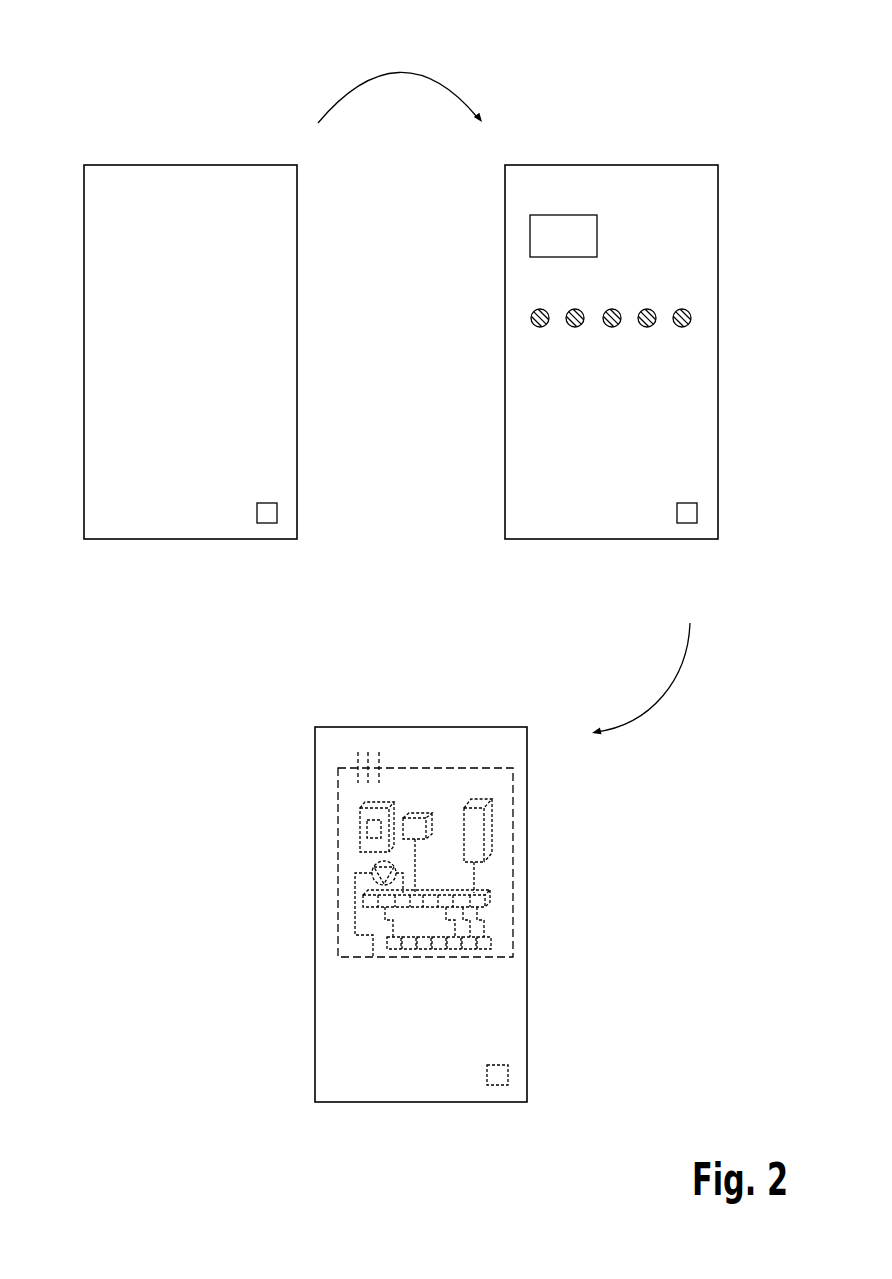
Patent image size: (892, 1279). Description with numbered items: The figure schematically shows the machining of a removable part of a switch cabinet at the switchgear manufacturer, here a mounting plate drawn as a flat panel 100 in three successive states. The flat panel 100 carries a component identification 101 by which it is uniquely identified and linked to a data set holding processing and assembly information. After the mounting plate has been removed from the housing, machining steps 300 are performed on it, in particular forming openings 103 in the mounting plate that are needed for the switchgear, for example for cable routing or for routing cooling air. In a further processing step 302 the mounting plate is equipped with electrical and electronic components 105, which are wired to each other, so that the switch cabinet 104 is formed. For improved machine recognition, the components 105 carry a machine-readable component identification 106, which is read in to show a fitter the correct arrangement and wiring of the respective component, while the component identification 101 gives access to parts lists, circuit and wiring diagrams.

The flat panel 100 is at (138, 574).
The component identification 101 is at (267, 512).
The openings 103 is at (567, 232).
The switch cabinet 104 is at (513, 902).
The electrical and/or electronic components 105 is at (350, 801).
The machine-readable component identification 106 is at (371, 830).
The machining steps 300 is at (400, 72).
The further processing step 302 is at (677, 685).